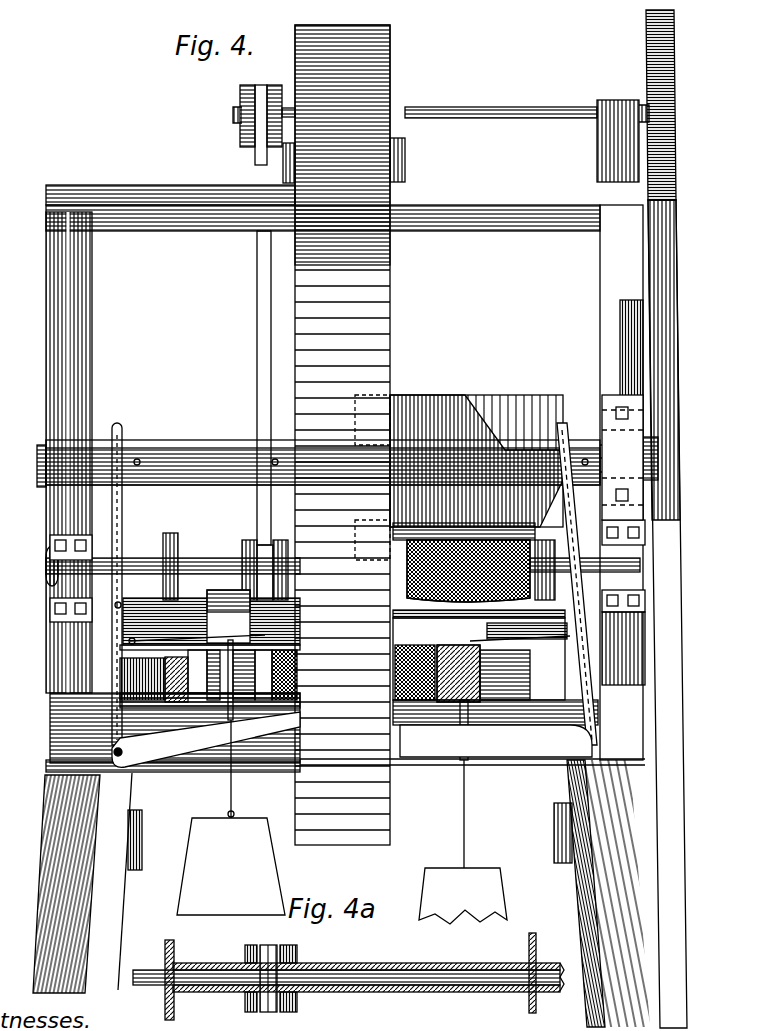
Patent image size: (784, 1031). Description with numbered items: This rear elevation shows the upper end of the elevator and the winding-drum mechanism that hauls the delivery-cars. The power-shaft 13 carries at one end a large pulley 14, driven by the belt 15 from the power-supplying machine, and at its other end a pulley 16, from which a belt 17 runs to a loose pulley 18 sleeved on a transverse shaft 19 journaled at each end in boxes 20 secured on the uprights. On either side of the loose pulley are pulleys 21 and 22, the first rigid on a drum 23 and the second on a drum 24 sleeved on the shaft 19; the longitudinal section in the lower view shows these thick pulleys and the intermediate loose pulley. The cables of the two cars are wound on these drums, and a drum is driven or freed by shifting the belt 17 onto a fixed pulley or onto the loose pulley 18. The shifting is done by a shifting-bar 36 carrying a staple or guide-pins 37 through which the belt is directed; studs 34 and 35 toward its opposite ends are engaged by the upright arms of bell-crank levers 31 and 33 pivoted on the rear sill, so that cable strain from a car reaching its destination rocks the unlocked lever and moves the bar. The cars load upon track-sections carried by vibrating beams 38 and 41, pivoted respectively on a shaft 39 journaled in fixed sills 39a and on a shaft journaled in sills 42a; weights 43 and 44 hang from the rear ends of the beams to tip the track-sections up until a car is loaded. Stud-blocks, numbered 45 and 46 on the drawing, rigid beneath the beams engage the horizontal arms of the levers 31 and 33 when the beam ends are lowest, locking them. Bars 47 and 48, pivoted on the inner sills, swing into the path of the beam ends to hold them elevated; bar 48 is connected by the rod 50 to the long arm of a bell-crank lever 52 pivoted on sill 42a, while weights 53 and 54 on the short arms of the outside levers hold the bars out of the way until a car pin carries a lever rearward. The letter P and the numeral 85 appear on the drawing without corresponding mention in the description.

In FIG. 4, the power-shaft 13 is at (439, 104).
In FIG. 4, the large pulley 14 is at (675, 50).
In FIG. 4, the belt 15 is at (678, 323).
In FIG. 4, the pulley 16 is at (240, 98).
In FIG. 4, the belt 17 is at (257, 323).
In FIG. 4, the loose pulley 18 is at (262, 542).
In FIG. 4A, the loose pulley 18 is at (268, 945).
In FIG. 4, the transverse shaft 19 is at (343, 558).
In FIG. 4A, the transverse shaft 19 is at (350, 972).
In FIG. 4, the boxes 20 is at (345, 540).
In FIG. 4, the pulley 21 is at (246, 540).
In FIG. 4A, the pulley 21 is at (250, 945).
In FIG. 4, the pulley 22 is at (280, 540).
In FIG. 4A, the pulley 22 is at (296, 942).
In FIG. 4, the drum 23 is at (178, 556).
In FIG. 4A, the drum 23 is at (205, 962).
In FIG. 4, the drum 24 is at (412, 594).
In FIG. 4A, the drum 24 is at (445, 947).
In FIG. 4, the bell-crank lever 31 is at (206, 739).
In FIG. 4, the bell-crank lever 33 is at (496, 741).
In FIG. 4, the stud 34 is at (139, 459).
In FIG. 4, the stud 35 is at (236, 705).
In FIG. 4, the shifting-bar 36 is at (352, 461).
In FIG. 4, the guide-pins or staple 37 is at (277, 458).
In FIG. 4, the vibrating beam 38 is at (211, 617).
In FIG. 4, the shaft 39 is at (205, 700).
In FIG. 4, the fixed sills 39a is at (287, 669).
In FIG. 4, the beam 41 is at (458, 673).
In FIG. 4, the fixed sills 42a is at (428, 690).
In FIG. 4, the weight 43 is at (231, 817).
In FIG. 4, the weight 44 is at (463, 842).
In FIG. 4, the bar 45 is at (509, 628).
In FIG. 4, the stud-block 46 is at (468, 716).
In FIG. 4, the bar 47 is at (197, 633).
In FIG. 4, the bar 48 is at (129, 642).
In FIG. 4, the link or rod 50 is at (572, 638).
In FIG. 4, the bell-crank lever 52 is at (115, 605).
In FIG. 4, the weight 53 is at (142, 830).
In FIG. 4, the weight 54 is at (547, 833).
In FIG. 4, the pin 85 is at (585, 458).
In FIG. 4, the plate P is at (490, 400).